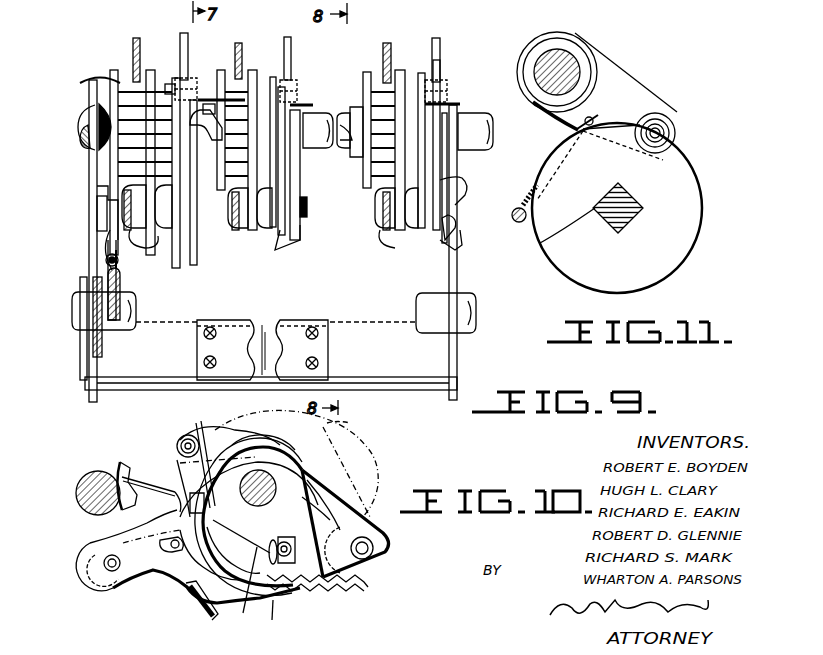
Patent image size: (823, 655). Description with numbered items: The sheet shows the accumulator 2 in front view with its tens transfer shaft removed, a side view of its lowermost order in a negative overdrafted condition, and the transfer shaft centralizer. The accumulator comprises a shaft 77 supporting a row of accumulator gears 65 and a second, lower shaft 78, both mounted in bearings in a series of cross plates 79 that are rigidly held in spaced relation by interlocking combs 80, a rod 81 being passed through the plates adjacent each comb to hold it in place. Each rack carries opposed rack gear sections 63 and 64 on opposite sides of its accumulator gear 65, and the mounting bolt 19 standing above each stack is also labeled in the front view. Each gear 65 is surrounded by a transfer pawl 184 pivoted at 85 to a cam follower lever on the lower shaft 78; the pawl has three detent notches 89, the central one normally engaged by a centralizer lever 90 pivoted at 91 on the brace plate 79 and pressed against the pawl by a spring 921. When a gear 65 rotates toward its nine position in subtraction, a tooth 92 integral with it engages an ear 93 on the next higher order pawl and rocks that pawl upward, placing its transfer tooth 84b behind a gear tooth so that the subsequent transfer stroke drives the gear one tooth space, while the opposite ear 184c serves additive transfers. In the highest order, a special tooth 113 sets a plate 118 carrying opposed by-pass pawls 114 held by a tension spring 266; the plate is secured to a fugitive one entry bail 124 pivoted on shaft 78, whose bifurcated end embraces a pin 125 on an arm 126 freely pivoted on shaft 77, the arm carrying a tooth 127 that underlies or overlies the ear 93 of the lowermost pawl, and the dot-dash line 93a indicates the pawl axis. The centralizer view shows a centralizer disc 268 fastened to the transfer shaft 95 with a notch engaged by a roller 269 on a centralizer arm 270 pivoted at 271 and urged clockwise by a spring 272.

In FIG. 9, the accumulator 2 is at (114, 76).
In FIG. 9, the bolt 19 is at (181, 48).
In FIG. 9, the rack gear section 63 is at (133, 62).
In FIG. 9, the rack gear section 64 is at (130, 230).
In FIG. 9, the accumulator gear 65 is at (86, 112).
In FIG. 9, the shaft 77 is at (470, 116).
In FIG. 9, the second shaft 78 is at (112, 300).
In FIG. 9, the cross plates 79 is at (275, 248).
In FIG. 10, the interlocking combs 80 is at (115, 520).
In FIG. 10, the rod 81 is at (127, 480).
In FIG. 10, the pivot 85 is at (373, 548).
In FIG. 10, the detent notches 89 is at (178, 460).
In FIG. 10, the centralizer lever 90 is at (178, 442).
In FIG. 10, the pivot 91 is at (104, 563).
In FIG. 9, the tooth 92 is at (352, 108).
In FIG. 9, the ear 93 is at (238, 80).
In FIG. 10, the axis 93a is at (226, 462).
In FIG. 11, the transfer shaft 95 is at (542, 243).
In FIG. 9, the special tooth 113 is at (97, 190).
In FIG. 9, the by-pass pawl 114 is at (104, 242).
In FIG. 9, the plate 118 is at (97, 212).
In FIG. 9, the fugitive one entry bail 124 is at (258, 308).
In FIG. 9, the pin 125 is at (460, 218).
In FIG. 9, the arm 126 is at (465, 178).
In FIG. 10, the tooth 127 is at (205, 428).
In FIG. 9, the transfer pawl 184 is at (190, 46).
In FIG. 10, the cam track 184c is at (331, 528).
In FIG. 10, the transfer tooth 84b is at (305, 493).
In FIG. 9, the tension spring 266 is at (120, 260).
In FIG. 11, the centralizer disc 268 is at (692, 190).
In FIG. 11, the roller 269 is at (670, 118).
In FIG. 11, the centralizer arm 270 is at (652, 90).
In FIG. 11, the pivot 271 is at (590, 55).
In FIG. 11, the spring 272 is at (580, 129).
In FIG. 10, the spring 921 is at (192, 602).